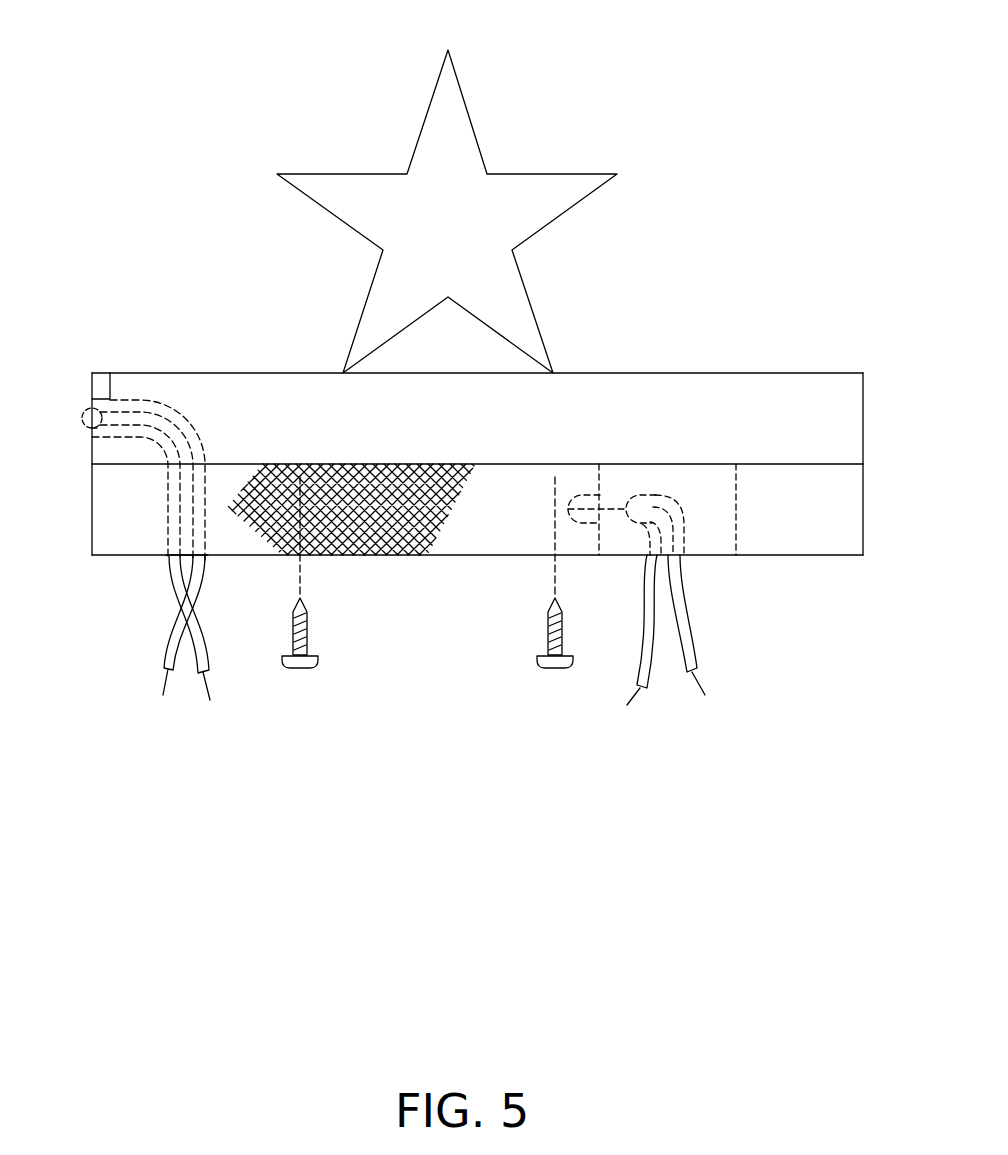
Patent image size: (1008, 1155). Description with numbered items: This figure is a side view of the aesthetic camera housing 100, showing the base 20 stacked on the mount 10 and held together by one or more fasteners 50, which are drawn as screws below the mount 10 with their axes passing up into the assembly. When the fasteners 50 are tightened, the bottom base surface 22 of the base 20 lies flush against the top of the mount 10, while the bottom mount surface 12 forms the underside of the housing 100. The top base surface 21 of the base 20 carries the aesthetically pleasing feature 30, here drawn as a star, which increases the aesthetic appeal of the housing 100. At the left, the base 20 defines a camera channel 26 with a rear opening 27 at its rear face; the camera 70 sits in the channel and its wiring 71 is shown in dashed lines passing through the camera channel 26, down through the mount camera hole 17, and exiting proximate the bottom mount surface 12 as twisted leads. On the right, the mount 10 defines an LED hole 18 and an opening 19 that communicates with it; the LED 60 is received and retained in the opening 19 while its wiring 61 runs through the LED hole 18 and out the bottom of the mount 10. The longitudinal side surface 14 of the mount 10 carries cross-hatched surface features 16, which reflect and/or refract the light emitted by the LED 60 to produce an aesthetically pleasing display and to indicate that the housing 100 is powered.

The aesthetic camera housing 100 is at (118, 63).
The mount 10 is at (850, 503).
The bottom mount surface 12 is at (823, 560).
The longitudinal side surface 14 is at (470, 507).
The surface features 16 is at (381, 566).
The mount camera hole 17 is at (170, 558).
The LED hole 18 is at (723, 505).
The opening 19 is at (585, 495).
The base 20 is at (850, 418).
The top base surface 21 is at (260, 373).
The bottom base surface 22 is at (116, 468).
The camera channel 26 is at (110, 400).
The rear opening 27 is at (92, 428).
The aesthetically pleasing feature 30 is at (522, 185).
The fastener 50 is at (307, 672).
The LED 60 is at (650, 495).
The wiring 61 is at (680, 612).
The camera 70 is at (80, 412).
The wiring 71 is at (158, 415).